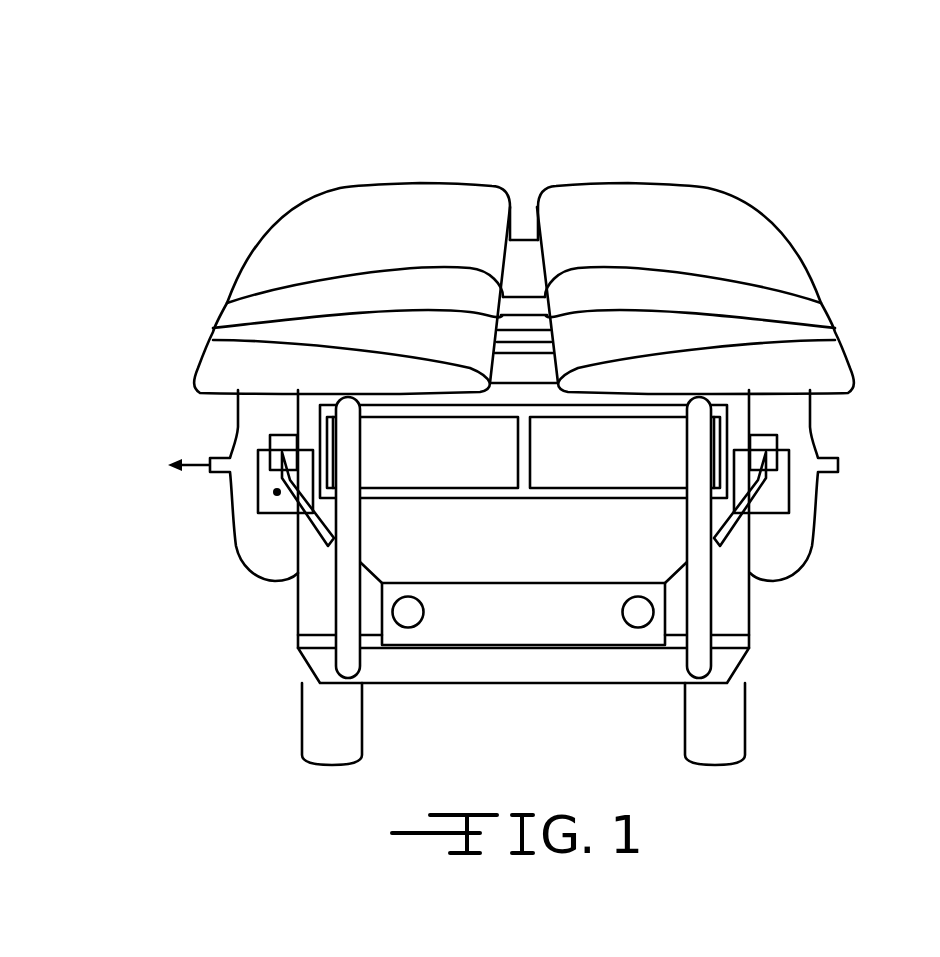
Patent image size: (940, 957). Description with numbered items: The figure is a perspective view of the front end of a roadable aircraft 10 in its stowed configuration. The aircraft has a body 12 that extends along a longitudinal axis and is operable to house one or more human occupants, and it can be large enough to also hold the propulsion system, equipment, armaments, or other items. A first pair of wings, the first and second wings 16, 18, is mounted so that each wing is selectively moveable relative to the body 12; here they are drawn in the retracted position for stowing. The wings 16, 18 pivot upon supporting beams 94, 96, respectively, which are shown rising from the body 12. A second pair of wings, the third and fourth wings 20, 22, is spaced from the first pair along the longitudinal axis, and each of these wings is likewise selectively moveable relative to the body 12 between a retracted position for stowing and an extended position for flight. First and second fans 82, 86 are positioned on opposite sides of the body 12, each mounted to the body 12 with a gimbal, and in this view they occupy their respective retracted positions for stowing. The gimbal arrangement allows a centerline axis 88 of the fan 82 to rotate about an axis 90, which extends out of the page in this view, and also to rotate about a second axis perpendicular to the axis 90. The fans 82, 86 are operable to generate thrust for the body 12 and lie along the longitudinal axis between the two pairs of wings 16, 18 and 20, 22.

The roadable aircraft 10 is at (559, 108).
The body 12 is at (567, 618).
The first wing 16 is at (228, 368).
The second wing 18 is at (833, 374).
The third wing 20 is at (417, 230).
The fourth wing 22 is at (703, 210).
The first fan 82 is at (258, 540).
The second fan 86 is at (787, 422).
The centerline axis 88 is at (206, 465).
The axis 90 is at (277, 492).
The supporting beam 94 is at (347, 605).
The supporting beam 96 is at (698, 602).